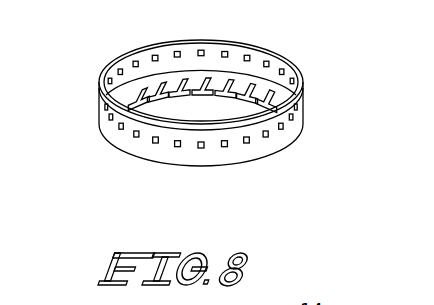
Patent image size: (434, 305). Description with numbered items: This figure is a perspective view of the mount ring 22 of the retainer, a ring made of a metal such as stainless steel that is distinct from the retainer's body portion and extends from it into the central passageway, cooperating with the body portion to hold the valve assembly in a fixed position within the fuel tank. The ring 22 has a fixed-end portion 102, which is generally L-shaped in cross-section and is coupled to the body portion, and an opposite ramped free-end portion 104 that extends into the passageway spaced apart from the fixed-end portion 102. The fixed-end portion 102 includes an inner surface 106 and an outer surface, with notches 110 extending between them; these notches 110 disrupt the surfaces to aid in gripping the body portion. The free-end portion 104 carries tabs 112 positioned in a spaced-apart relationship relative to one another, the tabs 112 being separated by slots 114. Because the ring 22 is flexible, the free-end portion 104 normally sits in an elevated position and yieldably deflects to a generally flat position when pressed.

The mount ring 22 is at (193, 115).
The fixed-end portion 102 is at (209, 88).
The inner surface 106 is at (161, 57).
The tabs 112 is at (158, 146).
The notches 110 is at (228, 149).
The ramped free-end portion 104 is at (202, 149).
The slots 114 is at (222, 98).